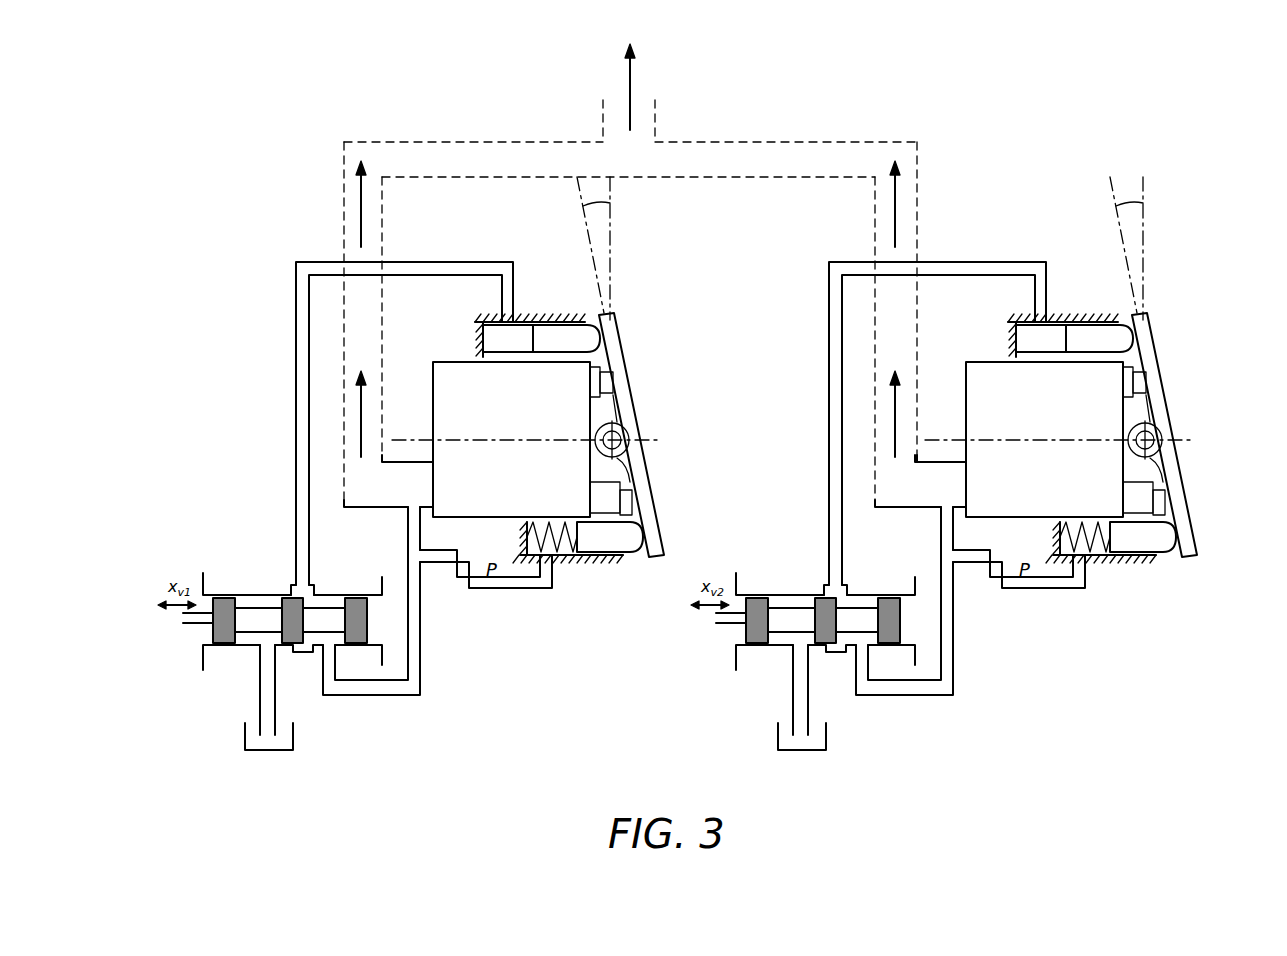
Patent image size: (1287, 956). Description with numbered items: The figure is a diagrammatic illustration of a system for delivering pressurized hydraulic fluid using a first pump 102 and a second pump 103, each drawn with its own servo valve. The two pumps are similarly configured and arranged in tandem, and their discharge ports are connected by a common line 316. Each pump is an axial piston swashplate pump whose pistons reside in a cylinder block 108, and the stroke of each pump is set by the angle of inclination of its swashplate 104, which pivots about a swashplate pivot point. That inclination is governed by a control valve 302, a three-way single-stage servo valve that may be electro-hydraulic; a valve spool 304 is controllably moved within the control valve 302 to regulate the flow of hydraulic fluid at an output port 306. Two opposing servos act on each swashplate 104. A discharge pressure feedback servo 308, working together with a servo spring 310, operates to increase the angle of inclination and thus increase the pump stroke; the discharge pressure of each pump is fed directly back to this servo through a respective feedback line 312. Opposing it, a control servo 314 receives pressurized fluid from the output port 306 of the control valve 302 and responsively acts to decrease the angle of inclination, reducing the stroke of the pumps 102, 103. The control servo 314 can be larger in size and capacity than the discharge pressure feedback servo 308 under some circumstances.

The first pump 102 is at (432, 195).
The second pump 103 is at (1022, 160).
The swashplate 104 is at (630, 405).
The cylinder block 108 is at (437, 361).
The control valve 302 is at (255, 558).
The valve spool 304 is at (250, 625).
The output port 306 is at (305, 592).
The discharge pressure feedback servo 308 is at (595, 574).
The servo spring 310 is at (545, 557).
The feedback line 312 is at (490, 589).
The control servo 314 is at (565, 300).
The line 316 is at (706, 135).